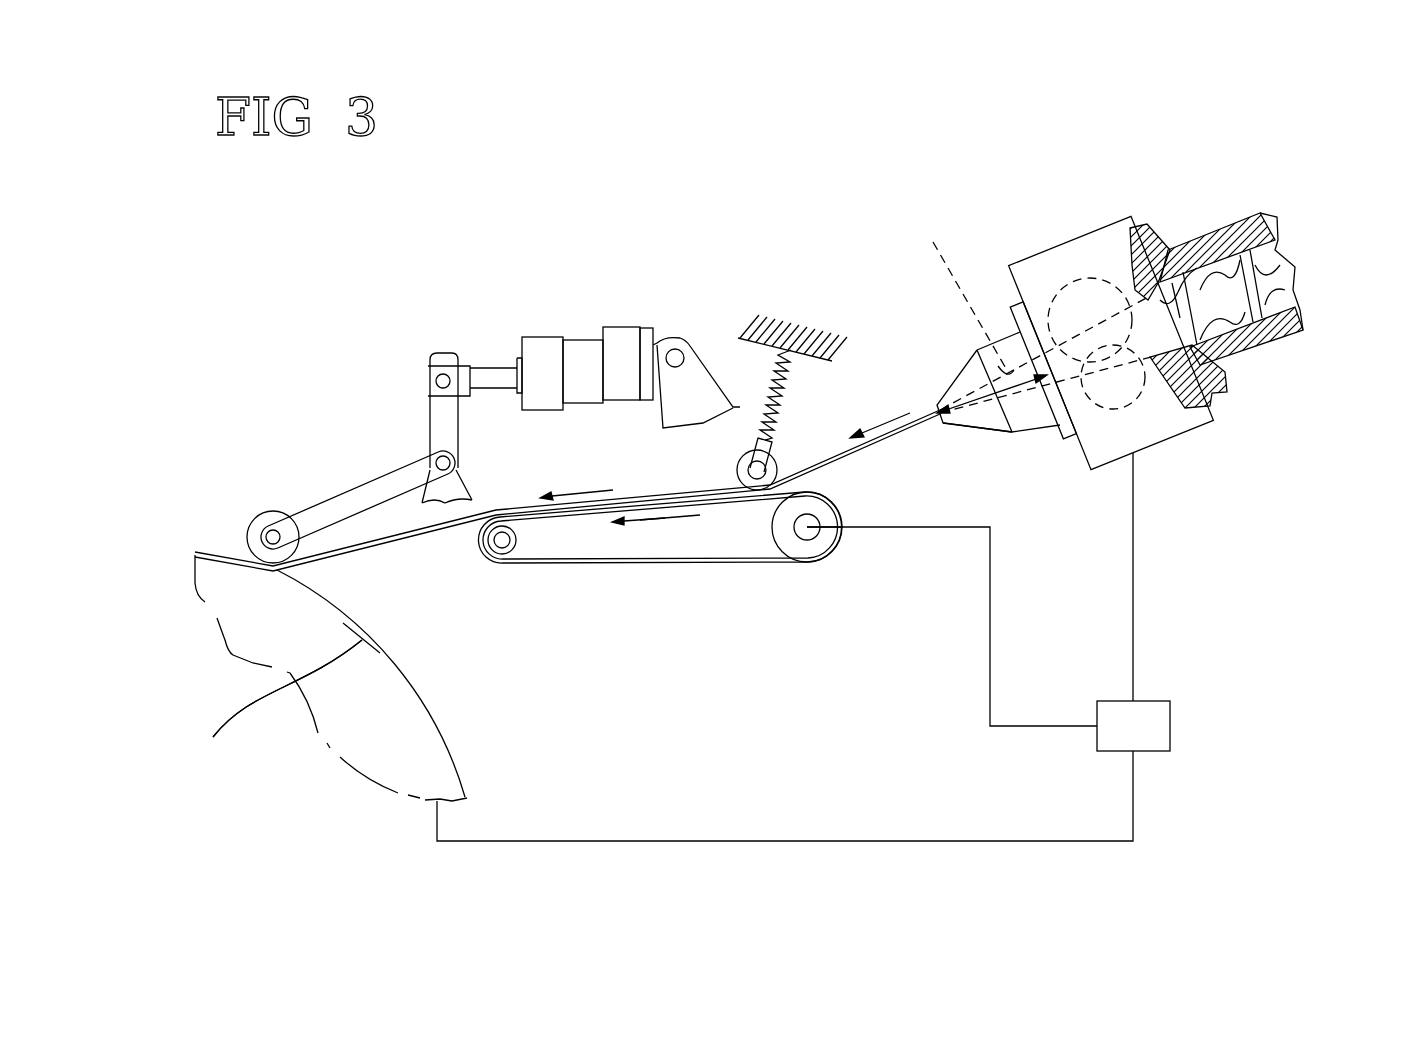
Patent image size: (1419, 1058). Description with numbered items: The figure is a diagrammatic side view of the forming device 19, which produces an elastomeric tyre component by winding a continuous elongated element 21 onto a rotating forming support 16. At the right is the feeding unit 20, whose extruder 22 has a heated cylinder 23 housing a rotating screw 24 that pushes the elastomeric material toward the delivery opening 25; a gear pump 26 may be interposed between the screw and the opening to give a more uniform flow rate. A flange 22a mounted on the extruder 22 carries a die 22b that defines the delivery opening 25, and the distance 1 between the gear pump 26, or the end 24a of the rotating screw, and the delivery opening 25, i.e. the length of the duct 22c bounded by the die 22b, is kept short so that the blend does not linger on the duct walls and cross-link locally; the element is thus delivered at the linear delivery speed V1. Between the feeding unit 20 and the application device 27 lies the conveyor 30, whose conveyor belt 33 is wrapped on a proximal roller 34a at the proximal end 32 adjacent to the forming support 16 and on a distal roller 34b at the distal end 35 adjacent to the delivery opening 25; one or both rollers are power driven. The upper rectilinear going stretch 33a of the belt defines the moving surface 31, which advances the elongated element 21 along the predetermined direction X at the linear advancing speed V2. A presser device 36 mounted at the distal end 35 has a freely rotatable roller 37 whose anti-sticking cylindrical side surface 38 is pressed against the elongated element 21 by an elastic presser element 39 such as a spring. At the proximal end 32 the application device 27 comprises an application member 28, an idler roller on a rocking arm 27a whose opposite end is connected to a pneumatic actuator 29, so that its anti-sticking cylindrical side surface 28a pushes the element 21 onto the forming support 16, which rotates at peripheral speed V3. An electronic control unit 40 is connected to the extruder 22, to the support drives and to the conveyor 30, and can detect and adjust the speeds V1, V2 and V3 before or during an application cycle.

The distance 1 is at (996, 434).
The forming support 16 is at (410, 738).
The forming device 19 is at (836, 228).
The feeding unit 20 is at (1262, 447).
The continuous elongated element 21 is at (930, 403).
The extruder 22 is at (1252, 377).
The flange 22a is at (992, 275).
The die 22b is at (1028, 416).
The duct 22c is at (962, 294).
The cylinder 23 is at (1232, 254).
The rotating screw 24 is at (1246, 232).
The end of the rotating screw 24a is at (1172, 312).
The delivery opening 25 is at (939, 420).
The gear pump 26 is at (1132, 400).
The application device 27 is at (288, 450).
The rocking arm 27a is at (368, 495).
The application member 28 is at (262, 520).
The cylindrical side surface 28a is at (250, 538).
The pneumatic actuator 29 is at (535, 350).
The conveyor 30 is at (686, 592).
The moving surface 31 is at (652, 500).
The proximal end 32 is at (518, 582).
The conveyor belt 33 is at (772, 582).
The rectilinear going stretch 33a is at (694, 540).
The proximal roller 34a is at (478, 542).
The distal roller 34b is at (806, 545).
The distal end 35 is at (862, 573).
The presser device 36 is at (727, 362).
The roller 37 is at (737, 467).
The cylindrical side surface 38 is at (777, 467).
The presser element 39 is at (757, 336).
The electronic control unit 40 is at (1150, 739).
The linear delivery speed V1 is at (903, 410).
The linear advancing speed V2 is at (582, 490).
The peripheral speed V3 is at (271, 702).
The predetermined direction X is at (643, 538).